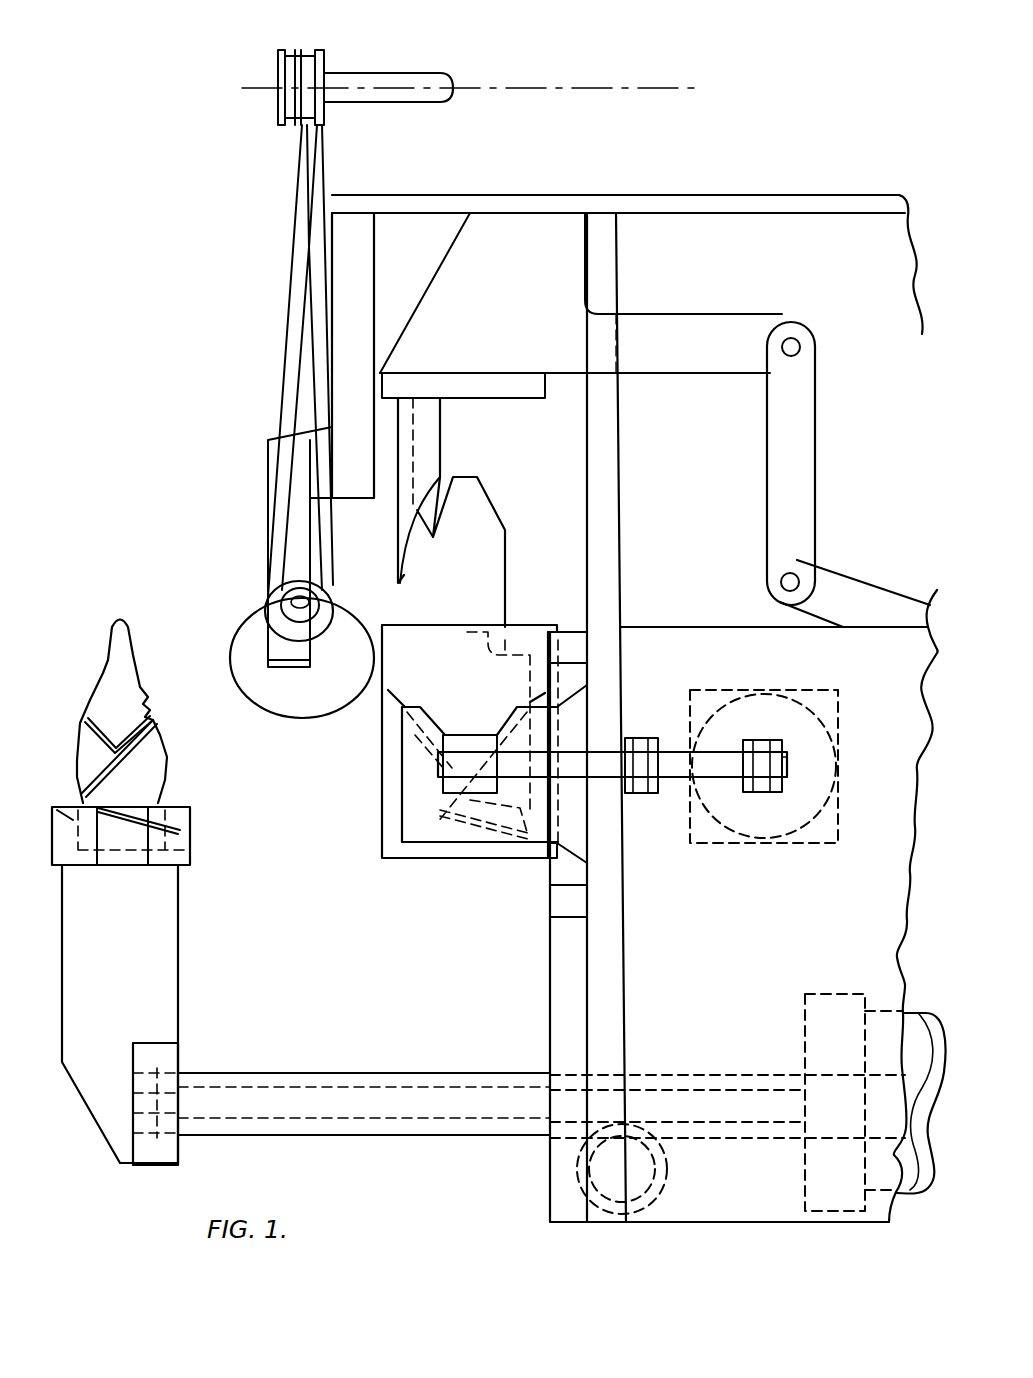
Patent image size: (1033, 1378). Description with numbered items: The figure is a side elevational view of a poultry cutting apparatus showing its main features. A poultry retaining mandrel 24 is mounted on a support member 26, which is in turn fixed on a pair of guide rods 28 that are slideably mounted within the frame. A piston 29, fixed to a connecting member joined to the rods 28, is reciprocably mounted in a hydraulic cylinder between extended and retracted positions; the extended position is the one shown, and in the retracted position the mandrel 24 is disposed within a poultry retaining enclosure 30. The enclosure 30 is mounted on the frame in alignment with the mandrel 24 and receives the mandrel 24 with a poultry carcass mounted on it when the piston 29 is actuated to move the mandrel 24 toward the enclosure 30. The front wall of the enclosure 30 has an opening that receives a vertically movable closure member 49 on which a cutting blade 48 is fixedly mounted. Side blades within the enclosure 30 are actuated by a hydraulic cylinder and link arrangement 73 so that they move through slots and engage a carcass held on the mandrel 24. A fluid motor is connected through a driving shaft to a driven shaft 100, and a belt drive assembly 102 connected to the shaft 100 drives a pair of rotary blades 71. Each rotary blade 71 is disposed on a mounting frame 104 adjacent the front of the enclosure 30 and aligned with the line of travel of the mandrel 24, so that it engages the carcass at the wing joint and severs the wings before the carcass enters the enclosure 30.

The driven shaft 100 is at (356, 75).
The belt drive assembly 102 is at (282, 60).
The mounting frame 104 is at (360, 243).
The cutting blade 48 is at (496, 451).
The closure member 49 is at (410, 562).
The rotary blades 71 is at (240, 632).
The poultry retaining mandrel 24 is at (112, 660).
The support member 26 is at (155, 908).
The guide rods 28 is at (302, 1077).
The poultry retaining enclosure 30 is at (427, 864).
The hydraulic cylinder and link arrangement 73 is at (440, 765).
The piston 29 is at (793, 827).